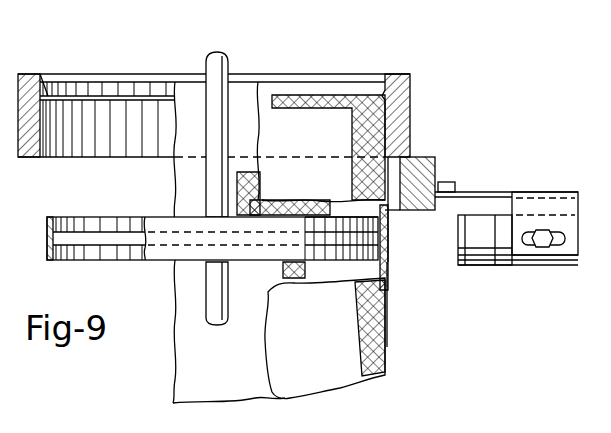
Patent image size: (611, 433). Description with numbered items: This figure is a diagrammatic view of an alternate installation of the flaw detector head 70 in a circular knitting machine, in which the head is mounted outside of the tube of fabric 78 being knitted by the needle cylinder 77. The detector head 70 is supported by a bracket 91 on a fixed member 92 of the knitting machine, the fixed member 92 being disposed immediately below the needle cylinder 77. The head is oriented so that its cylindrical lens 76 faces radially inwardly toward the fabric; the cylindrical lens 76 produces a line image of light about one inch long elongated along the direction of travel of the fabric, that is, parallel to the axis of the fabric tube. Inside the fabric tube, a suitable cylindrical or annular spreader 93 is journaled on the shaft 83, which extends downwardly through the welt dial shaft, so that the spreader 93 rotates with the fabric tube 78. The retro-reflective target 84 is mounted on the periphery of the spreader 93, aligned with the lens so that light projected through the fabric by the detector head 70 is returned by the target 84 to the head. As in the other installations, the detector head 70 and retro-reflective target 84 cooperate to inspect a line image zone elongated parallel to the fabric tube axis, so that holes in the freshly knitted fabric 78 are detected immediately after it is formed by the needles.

The detector head 70 is at (516, 257).
The cylindrical lens 76 is at (458, 248).
The needle cylinder 77 is at (410, 98).
The tube of fabric 78 is at (387, 347).
The shaft 83 is at (232, 60).
The retro-reflective target 84 is at (52, 217).
The bracket 91 is at (518, 196).
The fixed member 92 is at (438, 165).
The spreader 93 is at (162, 222).